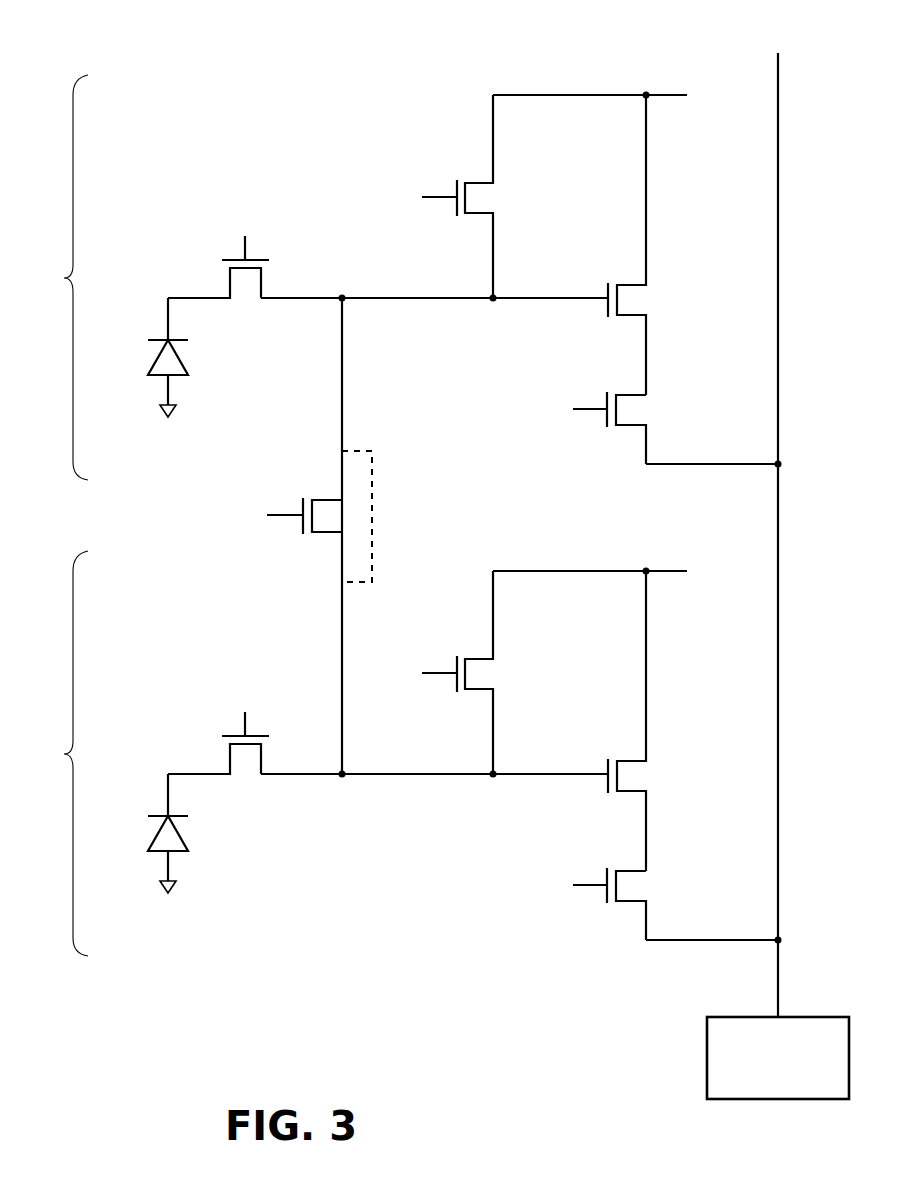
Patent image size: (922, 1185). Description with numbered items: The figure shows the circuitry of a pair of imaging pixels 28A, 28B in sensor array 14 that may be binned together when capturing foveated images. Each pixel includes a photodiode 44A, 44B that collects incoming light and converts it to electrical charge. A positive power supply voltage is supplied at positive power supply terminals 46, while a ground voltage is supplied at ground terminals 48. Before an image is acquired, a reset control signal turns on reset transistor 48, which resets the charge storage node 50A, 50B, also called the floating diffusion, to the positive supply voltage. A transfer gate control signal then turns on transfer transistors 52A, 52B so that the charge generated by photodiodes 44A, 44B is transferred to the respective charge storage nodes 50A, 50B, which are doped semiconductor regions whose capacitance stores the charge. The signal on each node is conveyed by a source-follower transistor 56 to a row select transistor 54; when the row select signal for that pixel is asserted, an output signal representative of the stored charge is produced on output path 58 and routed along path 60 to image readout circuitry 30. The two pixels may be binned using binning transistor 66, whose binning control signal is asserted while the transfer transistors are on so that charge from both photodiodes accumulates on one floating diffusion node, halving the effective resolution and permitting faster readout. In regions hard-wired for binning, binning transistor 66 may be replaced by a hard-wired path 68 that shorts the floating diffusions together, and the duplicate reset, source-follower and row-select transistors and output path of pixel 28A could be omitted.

The array 14 is at (90, 36).
The pixel 28A is at (54, 277).
The pixel 28B is at (54, 753).
The image readout circuitry 30 is at (754, 1094).
The photodiode 44A is at (160, 358).
The photodiode 44B is at (160, 834).
The positive power supply terminal 46 is at (582, 95).
The reset transistor 48 is at (480, 180).
The charge storage node 50A is at (346, 295).
The charge storage node 50B is at (346, 778).
The transfer transistor 52A is at (234, 290).
The transfer transistor 52B is at (234, 766).
The row select transistor 54 is at (630, 420).
The source-follower transistor 56 is at (632, 282).
The output path 58 is at (700, 468).
The path 60 is at (777, 980).
The binning transistor 66 is at (328, 498).
The hard-wired path 68 is at (373, 508).